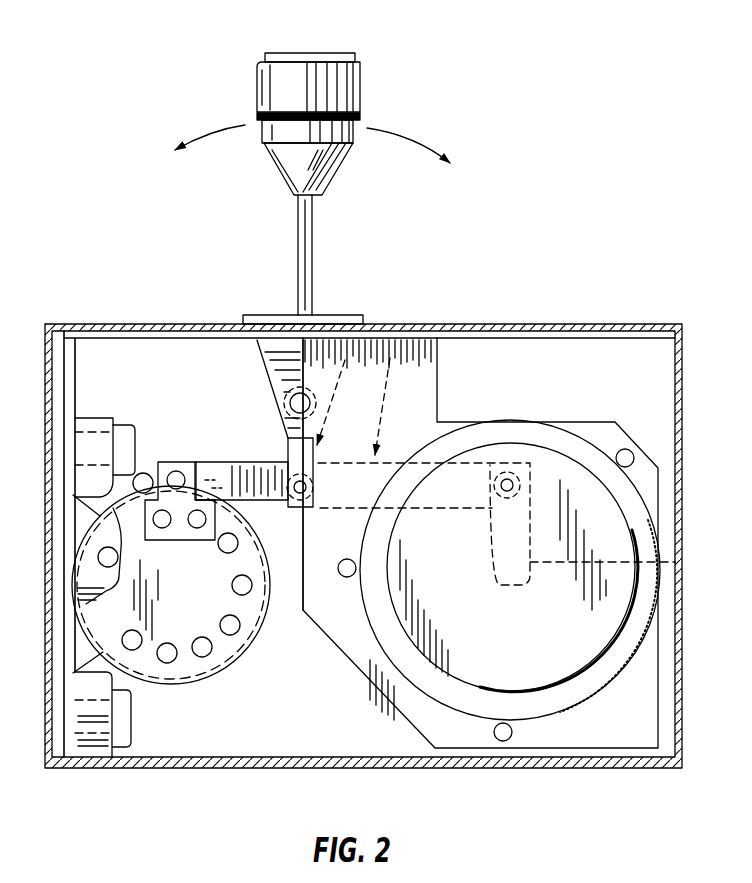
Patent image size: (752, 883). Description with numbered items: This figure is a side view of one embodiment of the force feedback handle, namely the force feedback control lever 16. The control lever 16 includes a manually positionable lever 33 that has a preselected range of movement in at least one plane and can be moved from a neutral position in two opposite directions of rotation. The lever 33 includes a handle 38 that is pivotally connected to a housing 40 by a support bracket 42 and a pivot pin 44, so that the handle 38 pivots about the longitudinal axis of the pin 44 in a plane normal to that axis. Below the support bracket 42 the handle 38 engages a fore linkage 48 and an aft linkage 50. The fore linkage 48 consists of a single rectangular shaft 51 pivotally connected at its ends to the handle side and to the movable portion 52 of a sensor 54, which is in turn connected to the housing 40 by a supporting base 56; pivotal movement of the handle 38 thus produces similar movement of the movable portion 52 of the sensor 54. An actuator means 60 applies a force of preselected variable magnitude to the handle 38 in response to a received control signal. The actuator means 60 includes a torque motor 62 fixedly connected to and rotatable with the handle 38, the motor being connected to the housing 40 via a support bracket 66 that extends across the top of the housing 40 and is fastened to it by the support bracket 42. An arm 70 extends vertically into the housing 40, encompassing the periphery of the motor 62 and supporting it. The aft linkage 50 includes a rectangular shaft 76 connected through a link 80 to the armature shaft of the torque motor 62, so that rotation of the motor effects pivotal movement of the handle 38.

The force feedback control lever 16 is at (527, 175).
The manually positionable lever 33 is at (388, 62).
The handle 38 is at (320, 172).
The housing 40 is at (682, 424).
The support bracket 42 is at (263, 365).
The pivot pin 44 is at (290, 400).
The fore linkage 48 is at (210, 413).
The aft linkage 50 is at (395, 330).
The rectangular shaft 51 is at (253, 462).
The movable portion 52 is at (185, 463).
The sensor 54 is at (171, 578).
The supporting base 56 is at (90, 483).
The actuator means 60 is at (567, 452).
The torque motor 62 is at (512, 567).
The support bracket 66 is at (415, 340).
The arm 70 is at (427, 722).
The rectangular shaft 76 is at (452, 506).
The link 80 is at (676, 565).